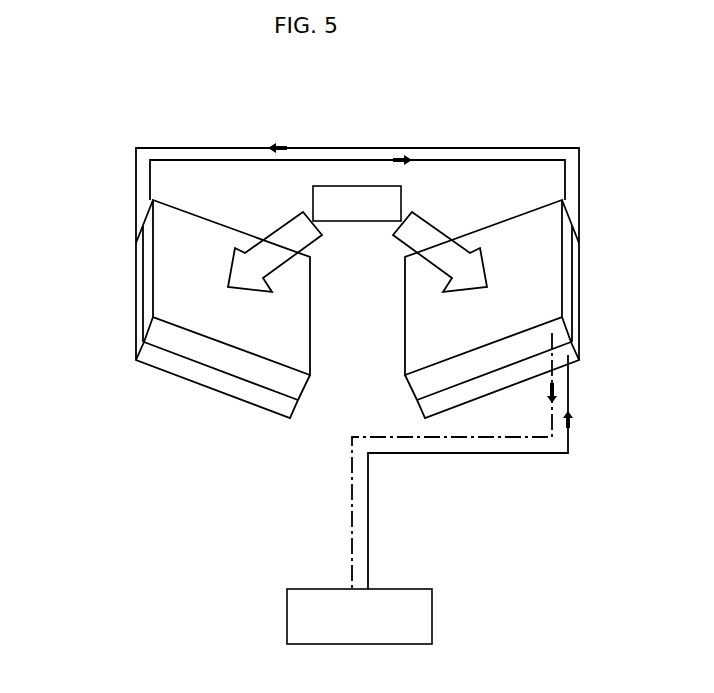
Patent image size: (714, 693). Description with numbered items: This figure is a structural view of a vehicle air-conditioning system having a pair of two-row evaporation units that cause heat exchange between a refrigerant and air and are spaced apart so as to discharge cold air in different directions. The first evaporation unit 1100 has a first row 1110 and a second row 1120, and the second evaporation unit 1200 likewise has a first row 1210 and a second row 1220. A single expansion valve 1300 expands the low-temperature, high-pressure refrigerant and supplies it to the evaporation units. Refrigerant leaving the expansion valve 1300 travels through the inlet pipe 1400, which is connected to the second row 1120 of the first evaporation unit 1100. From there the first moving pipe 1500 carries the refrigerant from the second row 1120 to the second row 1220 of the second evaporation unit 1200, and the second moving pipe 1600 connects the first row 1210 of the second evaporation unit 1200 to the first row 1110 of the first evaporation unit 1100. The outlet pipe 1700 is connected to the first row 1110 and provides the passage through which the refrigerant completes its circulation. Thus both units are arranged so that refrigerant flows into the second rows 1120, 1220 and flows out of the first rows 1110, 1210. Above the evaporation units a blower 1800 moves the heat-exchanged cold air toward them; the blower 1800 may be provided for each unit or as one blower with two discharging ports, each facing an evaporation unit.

The first evaporation unit 1100 is at (549, 309).
The first row 1110 is at (572, 262).
The second row 1120 is at (606, 313).
The second evaporation unit 1200 is at (167, 309).
The first row 1210 is at (146, 262).
The second row 1220 is at (110, 313).
The expansion valve 1300 is at (432, 616).
The inlet pipe 1400 is at (568, 440).
The first moving pipe 1500 is at (490, 148).
The second moving pipe 1600 is at (232, 160).
The outlet pipe 1700 is at (352, 483).
The blower 1800 is at (365, 222).